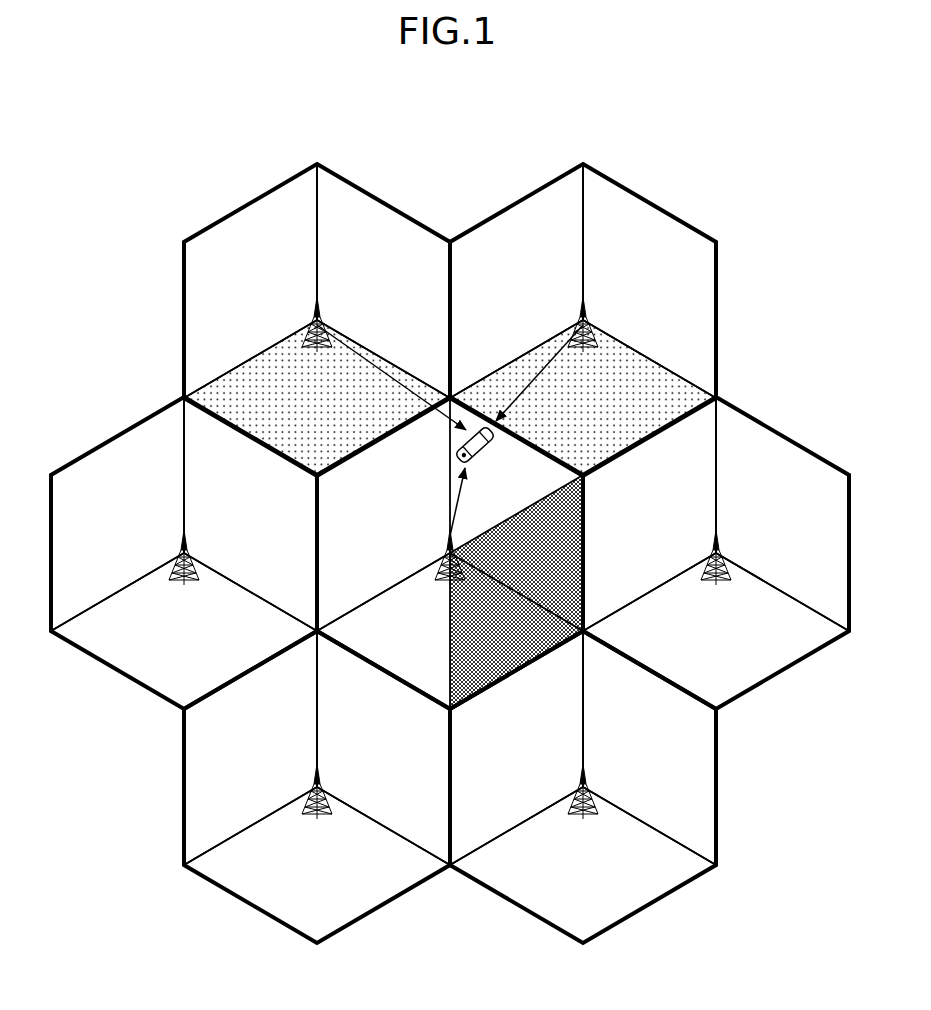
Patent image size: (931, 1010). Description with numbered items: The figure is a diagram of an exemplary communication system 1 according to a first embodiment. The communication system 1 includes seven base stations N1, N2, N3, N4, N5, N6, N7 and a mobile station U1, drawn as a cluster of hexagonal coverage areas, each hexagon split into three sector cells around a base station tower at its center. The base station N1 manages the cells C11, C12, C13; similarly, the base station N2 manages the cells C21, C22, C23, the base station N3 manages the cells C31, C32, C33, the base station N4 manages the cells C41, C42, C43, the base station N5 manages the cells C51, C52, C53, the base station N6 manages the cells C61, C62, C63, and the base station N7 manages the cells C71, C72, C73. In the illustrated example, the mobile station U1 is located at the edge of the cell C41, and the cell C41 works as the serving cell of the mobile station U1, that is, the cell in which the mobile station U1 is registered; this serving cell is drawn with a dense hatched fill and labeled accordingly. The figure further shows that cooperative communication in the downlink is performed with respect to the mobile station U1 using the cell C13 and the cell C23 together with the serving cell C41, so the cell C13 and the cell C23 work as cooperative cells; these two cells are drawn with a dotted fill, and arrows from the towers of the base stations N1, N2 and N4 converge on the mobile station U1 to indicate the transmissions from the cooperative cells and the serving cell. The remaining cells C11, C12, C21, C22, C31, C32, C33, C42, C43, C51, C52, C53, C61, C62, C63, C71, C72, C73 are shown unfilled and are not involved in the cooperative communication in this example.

The communication system 1 is at (462, 157).
The base station N1 is at (306, 308).
The base station N2 is at (572, 308).
The base station N3 is at (173, 543).
The base station N4 is at (440, 543).
The base station N5 is at (706, 543).
The base station N6 is at (306, 777).
The base station N7 is at (572, 777).
The mobile station U1 is at (458, 454).
The cell C11 is at (383, 281).
The cell C12 is at (250, 281).
The cell C13 is at (317, 398).
The cell C21 is at (649, 281).
The cell C22 is at (516, 281).
The cell C23 is at (583, 398).
The cell C31 is at (250, 514).
The cell C32 is at (117, 514).
The cell C33 is at (184, 631).
The cell C41 is at (516, 592).
The cell C42 is at (383, 514).
The cell C43 is at (450, 631).
The cell C51 is at (782, 514).
The cell C52 is at (649, 514).
The cell C53 is at (716, 631).
The cell C61 is at (383, 748).
The cell C62 is at (250, 748).
The cell C63 is at (317, 865).
The cell C71 is at (649, 748).
The cell C72 is at (516, 748).
The cell C73 is at (583, 865).